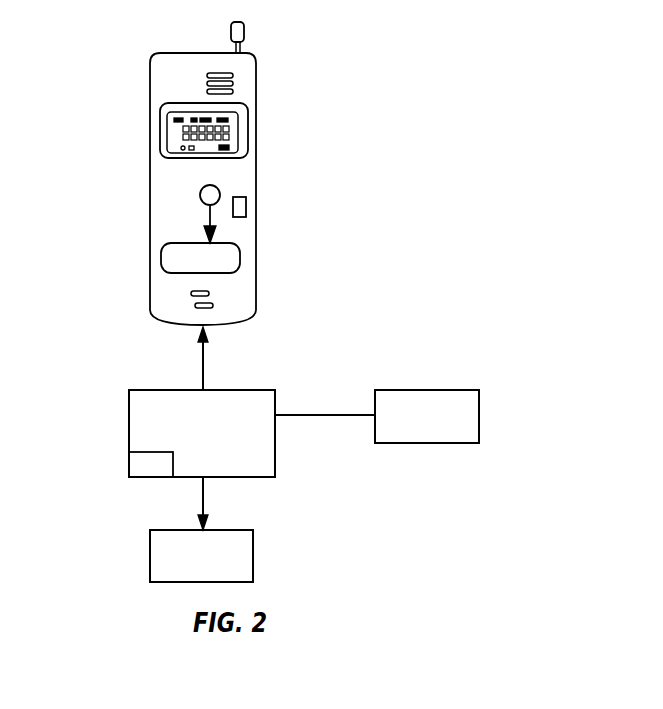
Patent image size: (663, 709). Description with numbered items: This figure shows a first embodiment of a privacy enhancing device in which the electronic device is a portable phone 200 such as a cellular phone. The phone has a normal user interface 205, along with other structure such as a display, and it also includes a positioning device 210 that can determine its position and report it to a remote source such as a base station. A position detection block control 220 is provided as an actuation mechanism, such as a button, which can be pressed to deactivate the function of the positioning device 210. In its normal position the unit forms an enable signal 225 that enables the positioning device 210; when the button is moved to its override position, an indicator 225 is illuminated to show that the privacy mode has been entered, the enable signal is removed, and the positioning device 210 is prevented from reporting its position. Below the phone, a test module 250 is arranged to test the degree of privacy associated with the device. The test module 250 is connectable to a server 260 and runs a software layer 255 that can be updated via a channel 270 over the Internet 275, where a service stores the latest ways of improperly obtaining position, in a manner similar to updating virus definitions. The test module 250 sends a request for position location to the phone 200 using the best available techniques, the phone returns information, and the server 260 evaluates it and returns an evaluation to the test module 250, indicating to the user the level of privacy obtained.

The portable phone 200 is at (151, 86).
The normal user interface 205 is at (170, 133).
The positioning device 210 is at (228, 258).
The position detection block control 220 is at (218, 189).
The enable signal / indicator 225 is at (247, 203).
The test module 250 is at (129, 405).
The software layer 255 is at (136, 467).
The server 260 is at (480, 406).
The channel / update 270 is at (200, 503).
The internet 275 is at (152, 553).